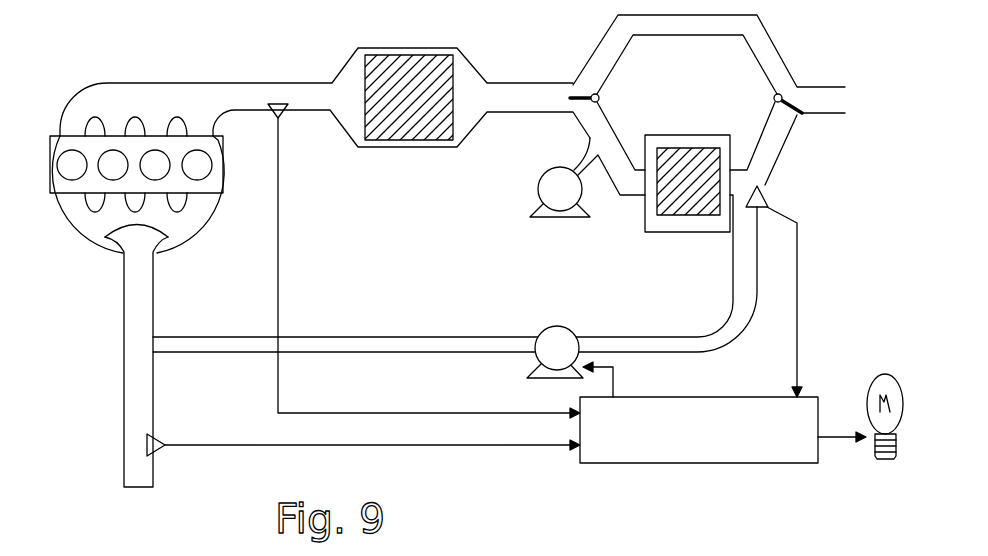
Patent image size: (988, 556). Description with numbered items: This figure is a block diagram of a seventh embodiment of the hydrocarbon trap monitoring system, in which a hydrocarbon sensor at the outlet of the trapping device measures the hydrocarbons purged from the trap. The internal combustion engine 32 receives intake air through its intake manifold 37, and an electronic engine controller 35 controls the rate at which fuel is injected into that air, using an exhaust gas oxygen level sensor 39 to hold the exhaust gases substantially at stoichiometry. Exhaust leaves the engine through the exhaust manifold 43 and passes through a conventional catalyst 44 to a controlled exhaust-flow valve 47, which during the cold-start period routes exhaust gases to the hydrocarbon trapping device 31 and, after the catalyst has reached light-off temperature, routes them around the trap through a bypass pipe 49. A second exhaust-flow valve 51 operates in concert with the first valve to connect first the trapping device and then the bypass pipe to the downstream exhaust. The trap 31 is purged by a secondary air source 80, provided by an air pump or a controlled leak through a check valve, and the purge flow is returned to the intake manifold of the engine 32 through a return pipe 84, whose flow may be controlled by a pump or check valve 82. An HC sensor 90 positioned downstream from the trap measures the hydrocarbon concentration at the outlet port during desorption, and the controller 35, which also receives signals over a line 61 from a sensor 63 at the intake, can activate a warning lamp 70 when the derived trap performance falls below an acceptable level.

The hydrocarbon trapping device 31 is at (703, 232).
The internal combustion engine 32 is at (223, 193).
The electronic engine controller 35 is at (771, 396).
The intake manifold 37 is at (90, 222).
The exhaust gas oxygen level sensor 39 is at (285, 115).
The exhaust manifold 43 is at (138, 88).
The catalyst 44 is at (378, 53).
The controlled exhaust-flow valve 47 is at (592, 90).
The bypass pipe 49 is at (768, 57).
The second exhaust-flow valve 51 is at (775, 92).
The sensor signal line 61 is at (262, 440).
The intake sensor 63 is at (163, 434).
The warning lamp 70 is at (882, 375).
The secondary air source 80 is at (541, 172).
The pump or check valve 82 is at (560, 326).
The return pipe 84 is at (412, 336).
The hydrocarbon sensor 90 is at (773, 172).